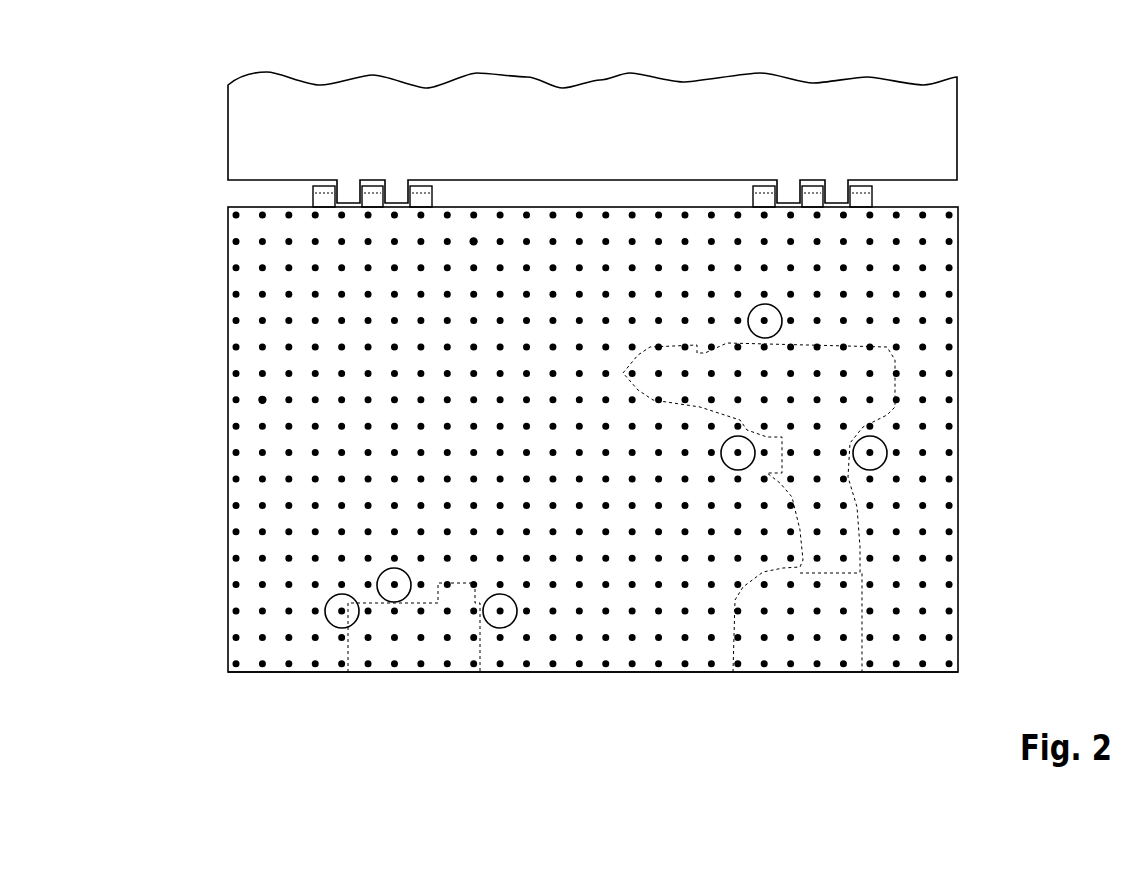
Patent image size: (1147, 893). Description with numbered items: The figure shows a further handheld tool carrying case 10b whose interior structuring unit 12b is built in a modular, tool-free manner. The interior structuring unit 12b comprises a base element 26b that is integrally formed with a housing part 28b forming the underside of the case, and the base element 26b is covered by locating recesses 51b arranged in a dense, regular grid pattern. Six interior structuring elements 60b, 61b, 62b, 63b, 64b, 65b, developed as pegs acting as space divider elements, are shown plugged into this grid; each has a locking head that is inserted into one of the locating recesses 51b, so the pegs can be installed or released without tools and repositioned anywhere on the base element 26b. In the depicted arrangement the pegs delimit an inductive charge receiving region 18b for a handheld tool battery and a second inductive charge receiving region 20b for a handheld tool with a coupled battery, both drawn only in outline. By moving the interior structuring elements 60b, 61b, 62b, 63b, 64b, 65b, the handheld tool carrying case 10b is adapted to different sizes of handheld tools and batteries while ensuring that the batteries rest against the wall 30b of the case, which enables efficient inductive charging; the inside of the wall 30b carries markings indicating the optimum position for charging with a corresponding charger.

The handheld tool carrying case 10b is at (962, 238).
The interior structuring unit 12b is at (185, 267).
The inductive charge receiving region 18b is at (366, 652).
The inductive charge receiving region 20b is at (862, 610).
The base element 26b is at (250, 438).
The housing part 28b is at (258, 401).
The wall 30b is at (595, 673).
The locating recesses 51b is at (475, 240).
The interior structuring element 60b is at (383, 567).
The interior structuring element 61b is at (325, 607).
The interior structuring element 62b is at (508, 628).
The interior structuring element 63b is at (782, 325).
The interior structuring element 64b is at (887, 460).
The interior structuring element 65b is at (755, 445).